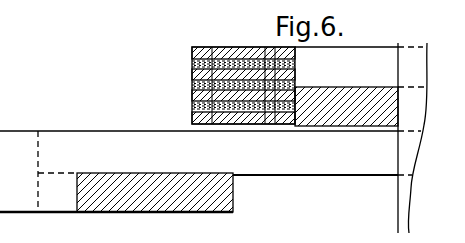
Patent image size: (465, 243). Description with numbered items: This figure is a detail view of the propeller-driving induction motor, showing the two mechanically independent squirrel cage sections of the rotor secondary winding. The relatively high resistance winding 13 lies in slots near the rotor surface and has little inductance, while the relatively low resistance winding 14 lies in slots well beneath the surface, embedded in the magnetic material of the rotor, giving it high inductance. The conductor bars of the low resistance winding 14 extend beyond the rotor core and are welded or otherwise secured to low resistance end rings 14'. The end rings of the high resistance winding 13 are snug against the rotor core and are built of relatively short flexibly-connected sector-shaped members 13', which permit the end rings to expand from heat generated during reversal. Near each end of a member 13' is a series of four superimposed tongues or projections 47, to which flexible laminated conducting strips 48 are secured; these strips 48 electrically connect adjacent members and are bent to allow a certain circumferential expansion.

The high resistance winding 13 is at (361, 130).
The sector-shaped members 13' is at (199, 125).
The low resistance winding 14 is at (218, 171).
The low resistance end rings 14' is at (116, 207).
The tongues or projections 47 is at (252, 50).
The flexible laminated conducting strips 48 is at (192, 105).